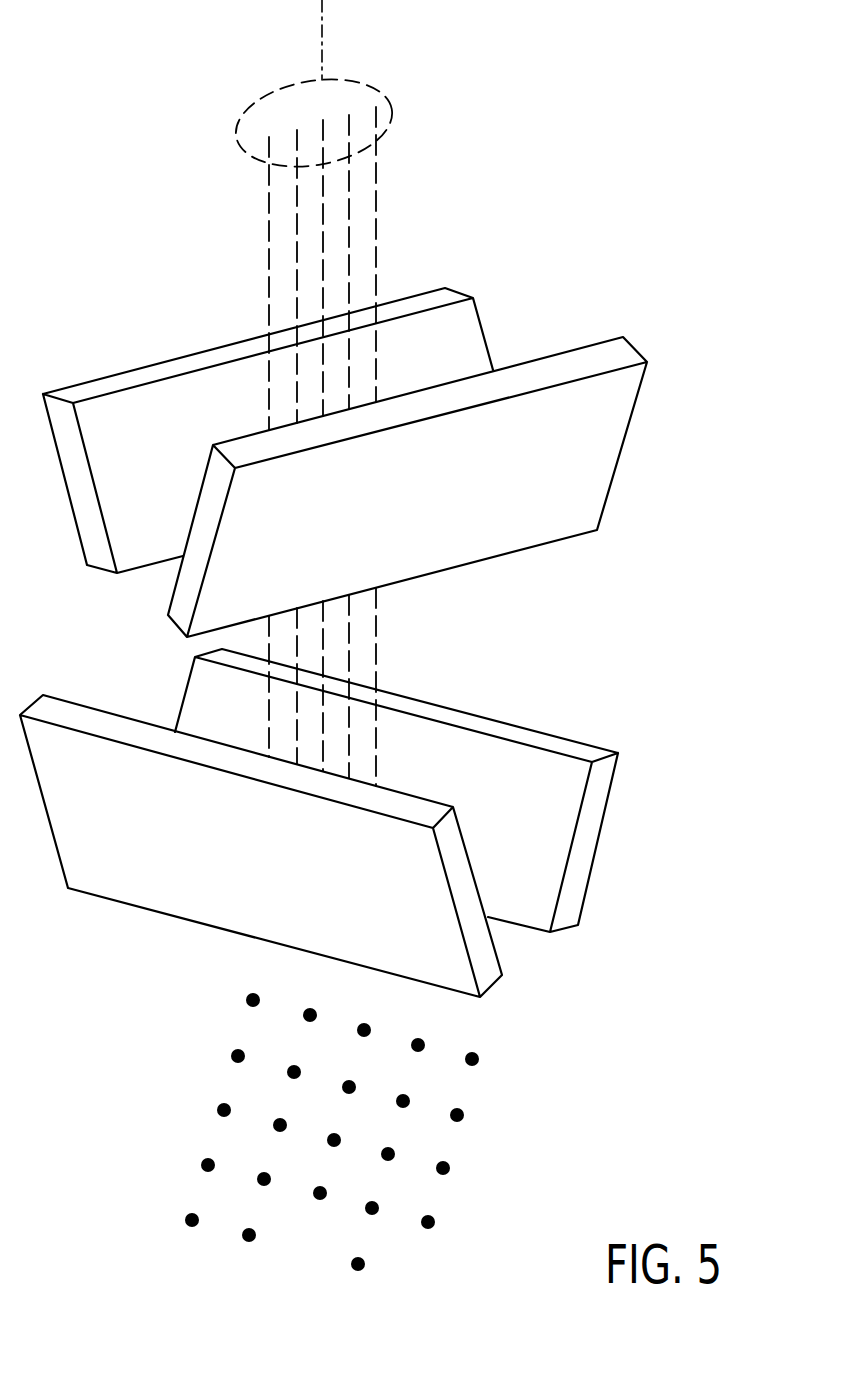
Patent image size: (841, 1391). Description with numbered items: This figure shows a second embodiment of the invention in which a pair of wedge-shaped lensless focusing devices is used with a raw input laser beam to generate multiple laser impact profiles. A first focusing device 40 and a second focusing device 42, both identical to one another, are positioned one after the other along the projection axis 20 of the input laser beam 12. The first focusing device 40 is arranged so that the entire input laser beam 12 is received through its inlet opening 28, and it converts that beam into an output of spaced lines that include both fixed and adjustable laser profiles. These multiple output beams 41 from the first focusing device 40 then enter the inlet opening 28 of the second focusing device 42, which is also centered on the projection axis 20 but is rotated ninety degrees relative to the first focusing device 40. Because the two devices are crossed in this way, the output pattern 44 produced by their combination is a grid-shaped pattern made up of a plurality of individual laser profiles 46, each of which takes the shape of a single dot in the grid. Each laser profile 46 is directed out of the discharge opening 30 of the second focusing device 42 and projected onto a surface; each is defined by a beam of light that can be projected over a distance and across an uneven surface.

The input laser beam 12 is at (396, 195).
The projection axis 20 is at (326, 35).
The inlet opening 28 is at (432, 337).
The discharge opening 30 is at (521, 944).
The first focusing device 40 is at (345, 497).
The multiple output beams 41 is at (378, 643).
The second focusing device 42 is at (577, 710).
The output pattern 44 is at (369, 1132).
The laser profiles 46 is at (232, 1056).